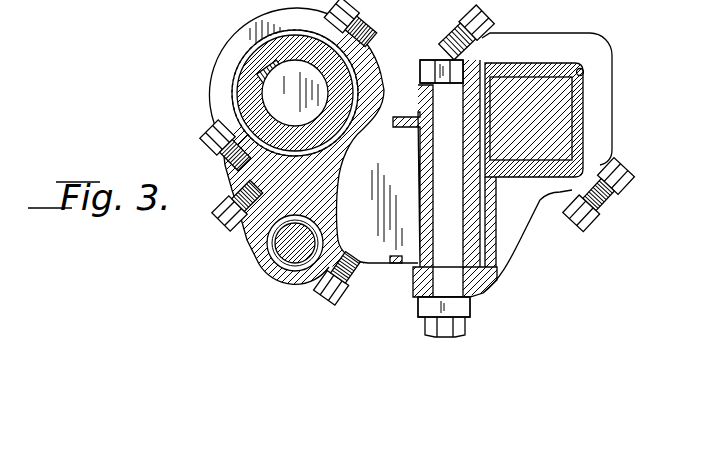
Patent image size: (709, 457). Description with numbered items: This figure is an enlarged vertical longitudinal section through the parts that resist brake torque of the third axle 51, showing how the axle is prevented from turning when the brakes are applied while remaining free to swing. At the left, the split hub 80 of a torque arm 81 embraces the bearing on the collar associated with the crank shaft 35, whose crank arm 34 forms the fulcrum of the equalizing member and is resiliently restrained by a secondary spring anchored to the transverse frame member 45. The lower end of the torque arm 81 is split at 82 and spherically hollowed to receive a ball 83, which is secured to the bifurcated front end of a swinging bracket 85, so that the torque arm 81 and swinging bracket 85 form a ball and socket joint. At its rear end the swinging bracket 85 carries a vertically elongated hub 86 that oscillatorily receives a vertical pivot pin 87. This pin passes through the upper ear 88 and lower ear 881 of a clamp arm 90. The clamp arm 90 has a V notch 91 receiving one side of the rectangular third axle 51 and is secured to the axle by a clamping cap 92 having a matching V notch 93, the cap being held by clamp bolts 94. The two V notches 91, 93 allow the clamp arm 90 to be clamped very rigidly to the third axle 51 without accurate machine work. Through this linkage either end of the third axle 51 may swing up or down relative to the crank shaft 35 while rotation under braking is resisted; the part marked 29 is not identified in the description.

The sheet reference 29 is at (56, 17).
The transverse frame member 45 is at (238, 68).
The split hub 80 is at (228, 92).
The crank shaft 35 is at (295, 93).
The torque arm 81 is at (230, 168).
The split lower end of torque arm 82 is at (230, 205).
The ball 83 is at (262, 250).
The crank arm 34 is at (291, 284).
The swinging bracket 85 is at (372, 266).
The vertically elongated hub 86 is at (412, 266).
The vertical pivot pin 87 is at (450, 305).
The lower ear 881 is at (495, 296).
The clamp arm 90 is at (515, 233).
The upper ear 88 is at (418, 93).
The V notch 93 is at (580, 68).
The clamping cap 92 is at (605, 72).
The third axle 51 is at (585, 88).
The V notch 91 is at (555, 160).
The clamp bolts 94 is at (626, 174).